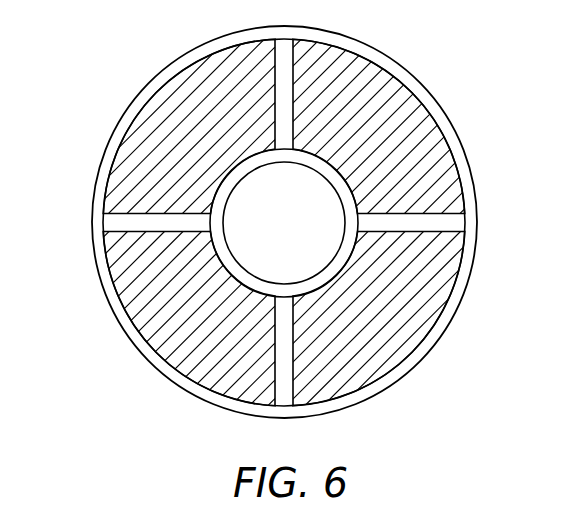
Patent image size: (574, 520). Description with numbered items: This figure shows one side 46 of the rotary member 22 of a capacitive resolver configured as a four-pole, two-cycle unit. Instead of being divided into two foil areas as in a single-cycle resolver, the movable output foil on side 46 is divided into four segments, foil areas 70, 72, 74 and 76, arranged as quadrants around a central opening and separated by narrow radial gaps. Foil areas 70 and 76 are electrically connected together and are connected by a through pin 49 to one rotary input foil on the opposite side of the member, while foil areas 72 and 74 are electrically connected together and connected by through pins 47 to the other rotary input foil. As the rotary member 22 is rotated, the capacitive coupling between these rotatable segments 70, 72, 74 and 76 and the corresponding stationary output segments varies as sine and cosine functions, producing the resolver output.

The rotary member 22 is at (287, 235).
The side of rotary member 46 is at (475, 188).
The through pins 47 is at (338, 163).
The through pin 49 is at (110, 200).
The foil area 70 is at (202, 75).
The foil area 72 is at (150, 327).
The foil area 74 is at (390, 102).
The foil area 76 is at (450, 272).